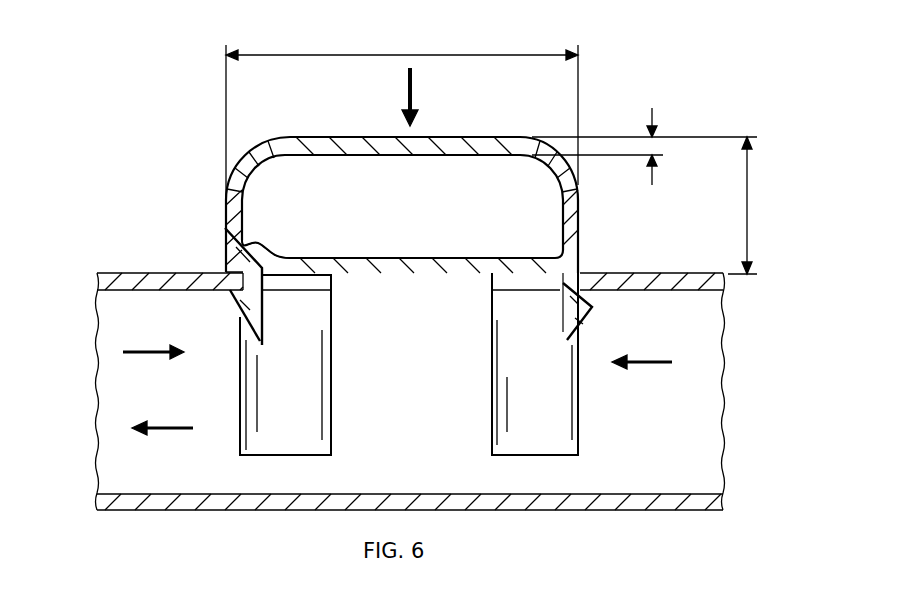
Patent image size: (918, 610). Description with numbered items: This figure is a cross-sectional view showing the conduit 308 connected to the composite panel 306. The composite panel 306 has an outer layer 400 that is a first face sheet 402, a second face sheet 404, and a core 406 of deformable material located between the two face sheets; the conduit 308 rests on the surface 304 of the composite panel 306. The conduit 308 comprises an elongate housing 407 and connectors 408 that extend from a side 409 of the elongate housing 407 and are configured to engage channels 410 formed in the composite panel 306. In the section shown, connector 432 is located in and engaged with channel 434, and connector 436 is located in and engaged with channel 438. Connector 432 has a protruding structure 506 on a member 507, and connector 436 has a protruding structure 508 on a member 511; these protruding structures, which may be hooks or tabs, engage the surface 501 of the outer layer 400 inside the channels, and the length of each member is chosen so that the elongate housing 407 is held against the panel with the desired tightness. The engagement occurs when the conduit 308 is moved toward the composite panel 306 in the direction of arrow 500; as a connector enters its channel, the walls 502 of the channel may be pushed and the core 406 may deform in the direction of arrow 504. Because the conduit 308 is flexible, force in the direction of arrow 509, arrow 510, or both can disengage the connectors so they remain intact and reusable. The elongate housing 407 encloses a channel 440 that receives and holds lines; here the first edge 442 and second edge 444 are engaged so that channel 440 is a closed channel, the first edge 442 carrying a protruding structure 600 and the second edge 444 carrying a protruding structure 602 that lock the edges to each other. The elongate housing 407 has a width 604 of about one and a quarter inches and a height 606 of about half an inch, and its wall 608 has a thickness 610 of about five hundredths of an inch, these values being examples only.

The surface 304 is at (682, 273).
The composite panel 306 is at (728, 340).
The conduit 308 is at (296, 138).
The outer layer 400 is at (137, 273).
The first face sheet 402 is at (99, 282).
The second face sheet 404 is at (100, 500).
The core 406 is at (400, 402).
The elongate housing 407 is at (438, 137).
The connectors 408 is at (595, 244).
The side 409 is at (415, 291).
The channels 410 is at (548, 470).
The connector 432 is at (285, 365).
The channel 434 is at (270, 434).
The connector 436 is at (535, 364).
The channel 438 is at (524, 434).
The channel 440 is at (395, 217).
The first edge 442 is at (226, 215).
The second edge 444 is at (262, 248).
The arrow 500 is at (408, 95).
The surface 501 is at (99, 305).
The walls 502 is at (240, 378).
The arrow 504 is at (165, 433).
The protruding structure 506 is at (233, 303).
The member 507 is at (243, 275).
The protruding structure 508 is at (596, 300).
The arrow 509 is at (153, 358).
The arrow 510 is at (648, 368).
The member 511 is at (593, 285).
The protruding structure 600 is at (226, 243).
The protruding structure 602 is at (300, 256).
The width 604 is at (400, 55).
The height 606 is at (752, 205).
The wall 608 is at (496, 137).
The thickness 610 is at (653, 118).